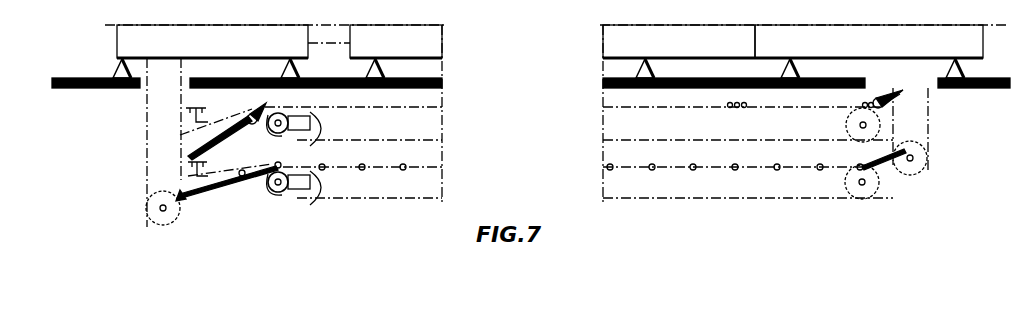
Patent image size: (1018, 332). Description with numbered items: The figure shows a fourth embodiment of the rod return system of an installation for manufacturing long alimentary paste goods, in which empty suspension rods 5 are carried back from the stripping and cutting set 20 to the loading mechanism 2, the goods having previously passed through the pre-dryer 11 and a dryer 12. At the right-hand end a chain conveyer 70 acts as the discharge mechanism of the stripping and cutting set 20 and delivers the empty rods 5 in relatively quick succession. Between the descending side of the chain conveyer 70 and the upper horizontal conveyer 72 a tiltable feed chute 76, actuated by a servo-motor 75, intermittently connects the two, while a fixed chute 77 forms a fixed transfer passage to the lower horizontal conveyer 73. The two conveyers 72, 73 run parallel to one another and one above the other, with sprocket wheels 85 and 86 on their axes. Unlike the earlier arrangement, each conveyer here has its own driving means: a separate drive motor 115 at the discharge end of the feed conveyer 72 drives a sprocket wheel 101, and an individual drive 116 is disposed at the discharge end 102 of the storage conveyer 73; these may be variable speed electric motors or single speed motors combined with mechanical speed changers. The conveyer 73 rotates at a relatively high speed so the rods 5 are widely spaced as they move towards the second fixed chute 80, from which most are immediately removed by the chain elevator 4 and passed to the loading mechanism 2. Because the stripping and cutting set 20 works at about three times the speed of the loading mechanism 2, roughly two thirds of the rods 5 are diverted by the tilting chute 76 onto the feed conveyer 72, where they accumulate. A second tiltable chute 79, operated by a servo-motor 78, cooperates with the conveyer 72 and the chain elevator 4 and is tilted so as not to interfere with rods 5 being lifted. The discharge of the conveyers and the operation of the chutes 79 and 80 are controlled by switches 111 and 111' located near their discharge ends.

The loading mechanism 2 is at (210, 52).
The pre-dryer 11 is at (404, 52).
The dryer 12 is at (676, 52).
The stripping and cutting set 20 is at (866, 52).
The chain elevator 4 is at (145, 140).
The suspension rods 5 is at (728, 108).
The servo-motor 75 is at (877, 98).
The tiltable feed chute 76 is at (898, 96).
The chain conveyer 70 is at (928, 136).
The upper chain conveyer 72 is at (400, 107).
The lower chain conveyer 73 is at (380, 198).
The fixed chute 77 is at (880, 168).
The servo-motor 78 is at (249, 116).
The second tiltable chute 79 is at (222, 137).
The second fixed chute 80 is at (225, 186).
The sprocket wheel 85 is at (862, 198).
The sprocket wheel 86 is at (862, 138).
The sprocket wheel 101 is at (282, 113).
The discharge end 102 is at (270, 190).
The switch 111 is at (179, 103).
The switch 111' is at (179, 158).
The driving means 115 is at (278, 136).
The driving means 116 is at (290, 192).